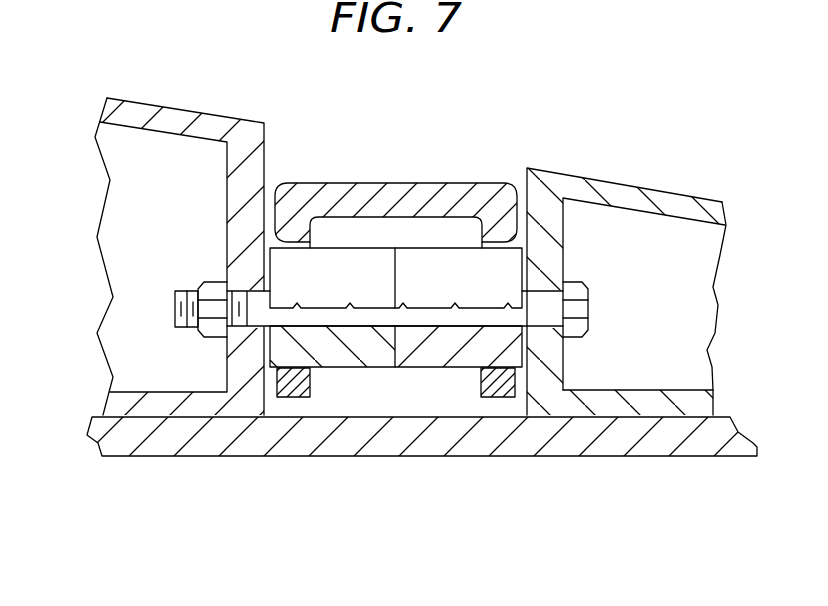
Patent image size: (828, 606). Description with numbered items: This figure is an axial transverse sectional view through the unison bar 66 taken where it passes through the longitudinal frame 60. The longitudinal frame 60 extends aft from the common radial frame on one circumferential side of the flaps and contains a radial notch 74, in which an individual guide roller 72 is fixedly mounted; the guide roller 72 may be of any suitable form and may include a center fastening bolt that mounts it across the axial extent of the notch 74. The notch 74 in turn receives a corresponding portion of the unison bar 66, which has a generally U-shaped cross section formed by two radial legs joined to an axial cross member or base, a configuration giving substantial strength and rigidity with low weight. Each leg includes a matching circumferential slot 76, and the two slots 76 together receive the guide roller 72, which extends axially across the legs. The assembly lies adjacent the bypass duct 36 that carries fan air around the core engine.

The bypass duct 36 is at (88, 445).
The longitudinal frame 60 is at (667, 192).
The unison bar 66 is at (373, 183).
The guide roller 72 is at (476, 283).
The radial notch 74 is at (265, 145).
The circumferential slot 76 is at (315, 243).